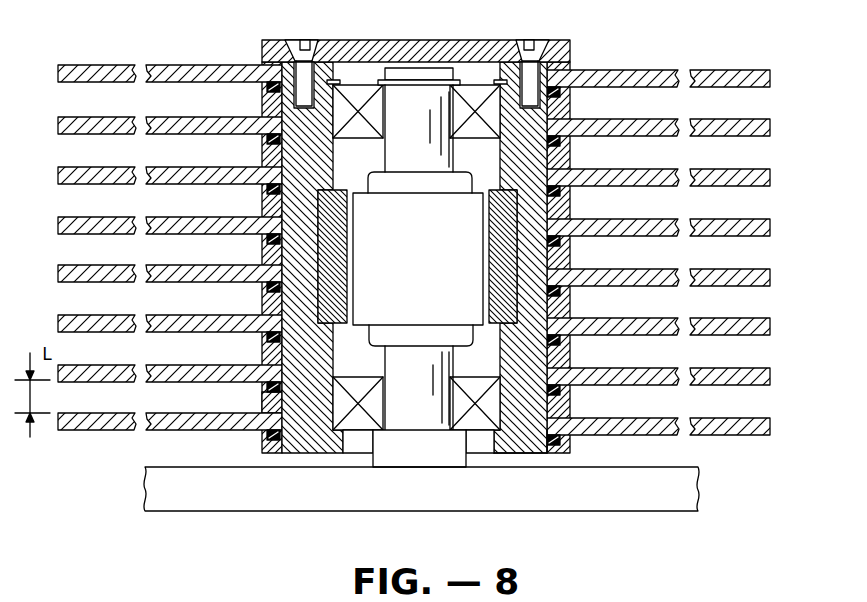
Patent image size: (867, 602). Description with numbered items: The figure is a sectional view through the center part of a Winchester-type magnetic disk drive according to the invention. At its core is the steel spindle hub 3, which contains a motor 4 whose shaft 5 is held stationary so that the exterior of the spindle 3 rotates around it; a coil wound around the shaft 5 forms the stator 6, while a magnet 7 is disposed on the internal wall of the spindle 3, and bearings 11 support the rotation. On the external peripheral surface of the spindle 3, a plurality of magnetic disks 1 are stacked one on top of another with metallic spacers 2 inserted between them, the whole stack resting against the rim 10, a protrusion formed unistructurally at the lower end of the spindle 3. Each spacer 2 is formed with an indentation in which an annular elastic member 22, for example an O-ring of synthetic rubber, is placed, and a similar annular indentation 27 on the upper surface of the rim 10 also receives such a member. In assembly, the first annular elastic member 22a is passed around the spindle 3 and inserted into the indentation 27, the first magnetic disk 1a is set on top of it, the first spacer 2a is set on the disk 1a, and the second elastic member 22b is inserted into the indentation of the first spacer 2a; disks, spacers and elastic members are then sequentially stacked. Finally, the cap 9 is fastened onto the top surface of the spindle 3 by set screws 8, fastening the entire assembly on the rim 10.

The magnetic disks 1 is at (431, 268).
The first magnetic disk 1a is at (767, 436).
The spacers 2 is at (421, 242).
The first spacer 2a is at (263, 402).
The spindle hub 3 is at (438, 306).
The motor 4 is at (359, 140).
The shaft 5 is at (417, 420).
The stator 6 is at (373, 468).
The magnet 7 is at (360, 252).
The set screws 8 is at (293, 41).
The cap 9 is at (419, 46).
The rim 10 is at (567, 454).
The bearings 11 is at (479, 96).
The annular elastic members 22 is at (388, 235).
The first annular elastic member 22a is at (266, 435).
The second elastic member 22b is at (265, 368).
The annular indentation 27 is at (562, 434).